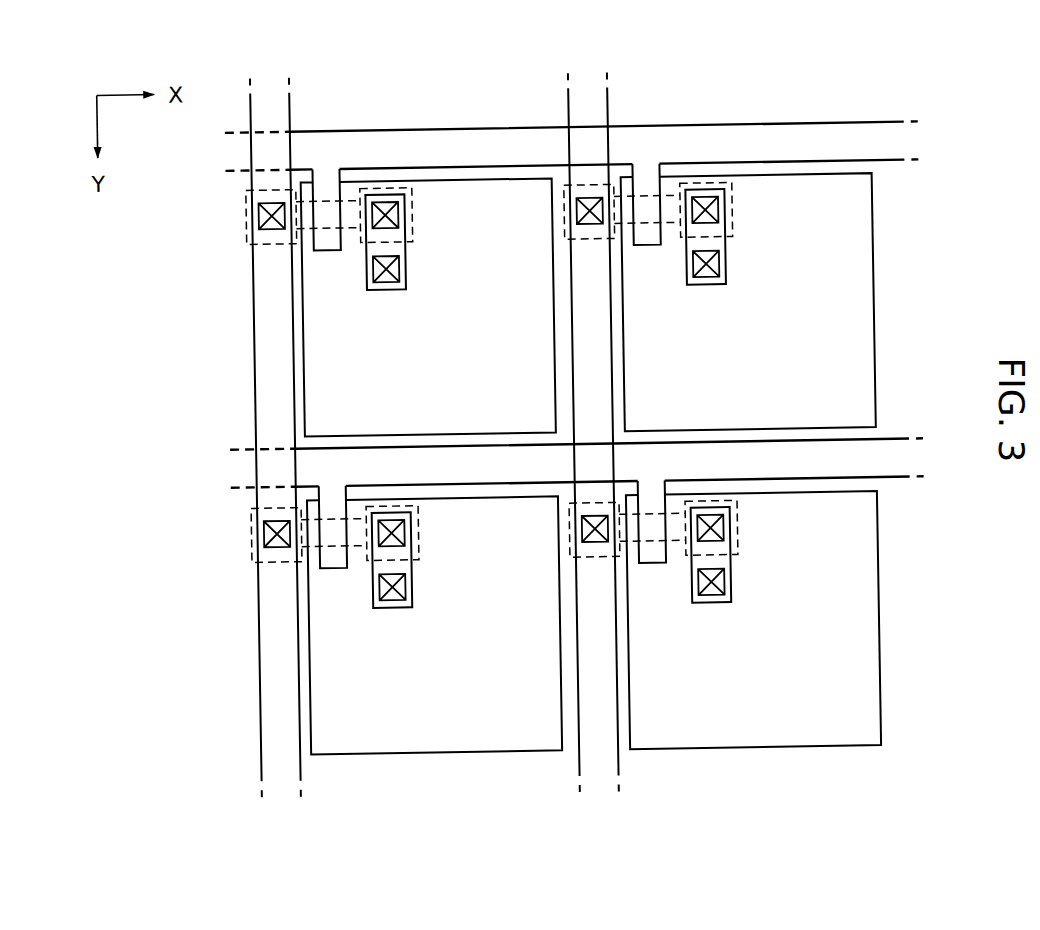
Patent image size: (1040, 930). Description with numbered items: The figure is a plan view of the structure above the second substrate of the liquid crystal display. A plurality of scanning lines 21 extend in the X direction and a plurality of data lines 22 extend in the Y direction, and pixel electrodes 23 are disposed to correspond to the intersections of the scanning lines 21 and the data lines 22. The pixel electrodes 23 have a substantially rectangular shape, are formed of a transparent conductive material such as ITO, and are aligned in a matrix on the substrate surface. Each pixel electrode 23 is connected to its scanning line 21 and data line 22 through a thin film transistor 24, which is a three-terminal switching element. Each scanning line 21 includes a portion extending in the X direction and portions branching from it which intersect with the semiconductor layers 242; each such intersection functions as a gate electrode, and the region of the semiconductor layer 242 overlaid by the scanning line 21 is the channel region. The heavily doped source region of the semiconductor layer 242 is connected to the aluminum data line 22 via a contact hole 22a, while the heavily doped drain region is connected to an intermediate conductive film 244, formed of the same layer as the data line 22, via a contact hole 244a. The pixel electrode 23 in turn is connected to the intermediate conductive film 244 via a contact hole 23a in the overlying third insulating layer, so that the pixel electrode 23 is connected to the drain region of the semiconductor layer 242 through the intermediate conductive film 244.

The scanning line 21 is at (872, 127).
The data line 22 is at (300, 98).
The contact hole 22a is at (262, 223).
The pixel electrode 23 is at (524, 206).
The contact hole 23a is at (403, 270).
The thin film transistor 24 is at (341, 281).
The semiconductor layer 242 is at (249, 196).
The intermediate conductive film 244 is at (409, 246).
The contact hole 244a is at (403, 210).